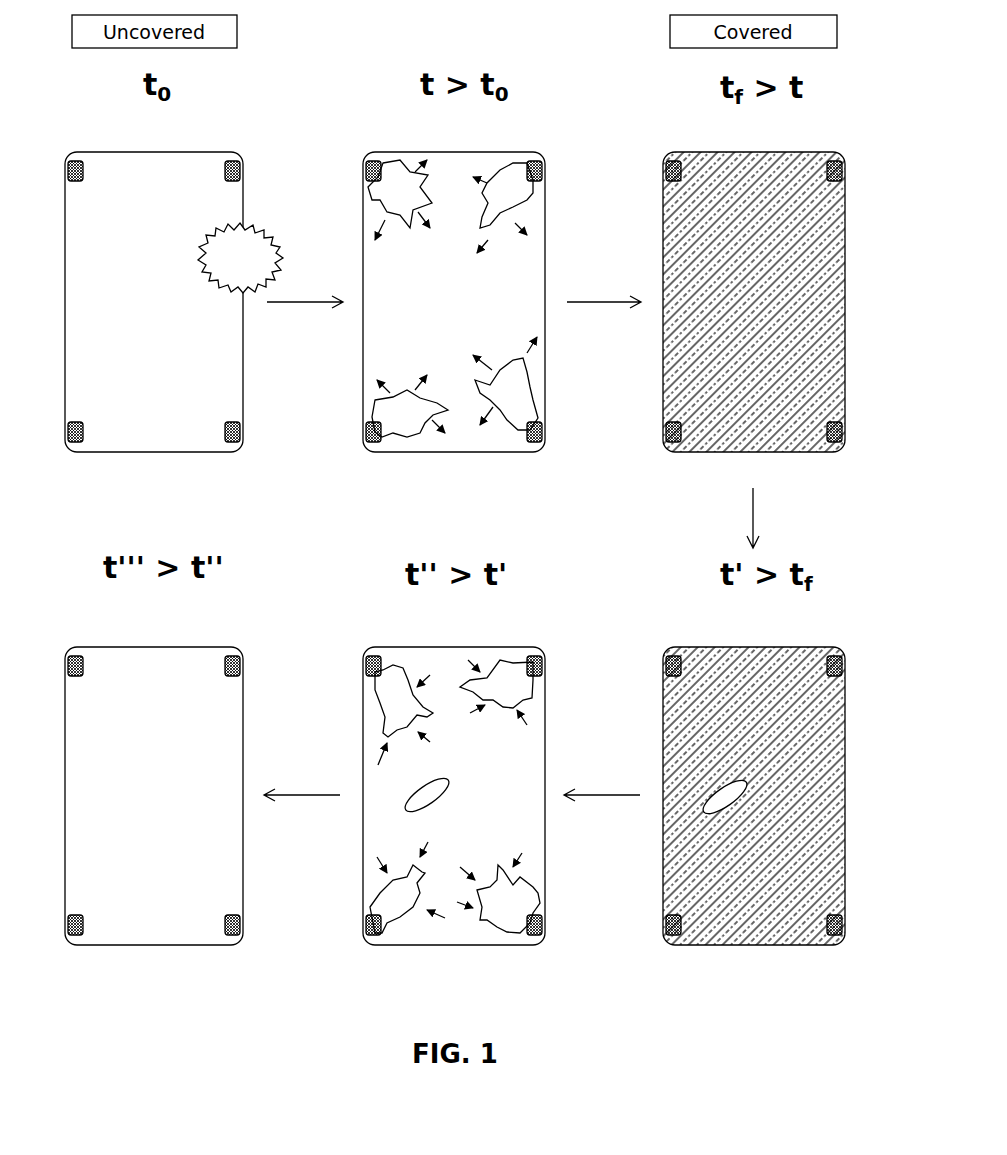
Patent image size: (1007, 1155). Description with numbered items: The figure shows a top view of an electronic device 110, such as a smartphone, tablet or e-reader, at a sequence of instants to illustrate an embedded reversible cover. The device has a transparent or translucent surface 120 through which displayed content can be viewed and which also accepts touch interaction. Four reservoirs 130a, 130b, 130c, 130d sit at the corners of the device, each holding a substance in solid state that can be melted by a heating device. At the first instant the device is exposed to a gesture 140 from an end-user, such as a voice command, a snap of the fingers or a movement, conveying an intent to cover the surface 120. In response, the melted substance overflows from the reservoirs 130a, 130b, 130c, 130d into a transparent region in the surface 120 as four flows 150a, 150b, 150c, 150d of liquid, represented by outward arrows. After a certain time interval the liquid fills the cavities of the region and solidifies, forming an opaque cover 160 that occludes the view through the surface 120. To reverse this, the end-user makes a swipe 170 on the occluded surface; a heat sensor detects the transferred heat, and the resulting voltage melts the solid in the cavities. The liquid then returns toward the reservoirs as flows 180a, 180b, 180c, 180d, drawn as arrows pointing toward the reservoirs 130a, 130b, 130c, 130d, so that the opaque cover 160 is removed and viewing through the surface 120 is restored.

The electronic device 110 is at (152, 152).
The surface 120 is at (168, 187).
The reservoir 130a is at (75, 161).
The reservoir 130b is at (235, 161).
The reservoir 130c is at (78, 442).
The reservoir 130d is at (235, 442).
The gesture 140 is at (266, 235).
The flow of liquid 150a is at (405, 232).
The flow of liquid 150b is at (535, 196).
The flow of liquid 150c is at (375, 400).
The flow of liquid 150d is at (530, 390).
The opaque cover 160 is at (770, 196).
The swipe 170 is at (742, 783).
The flow 180a is at (378, 700).
The flow 180b is at (533, 698).
The flow 180c is at (380, 895).
The flow 180d is at (535, 885).